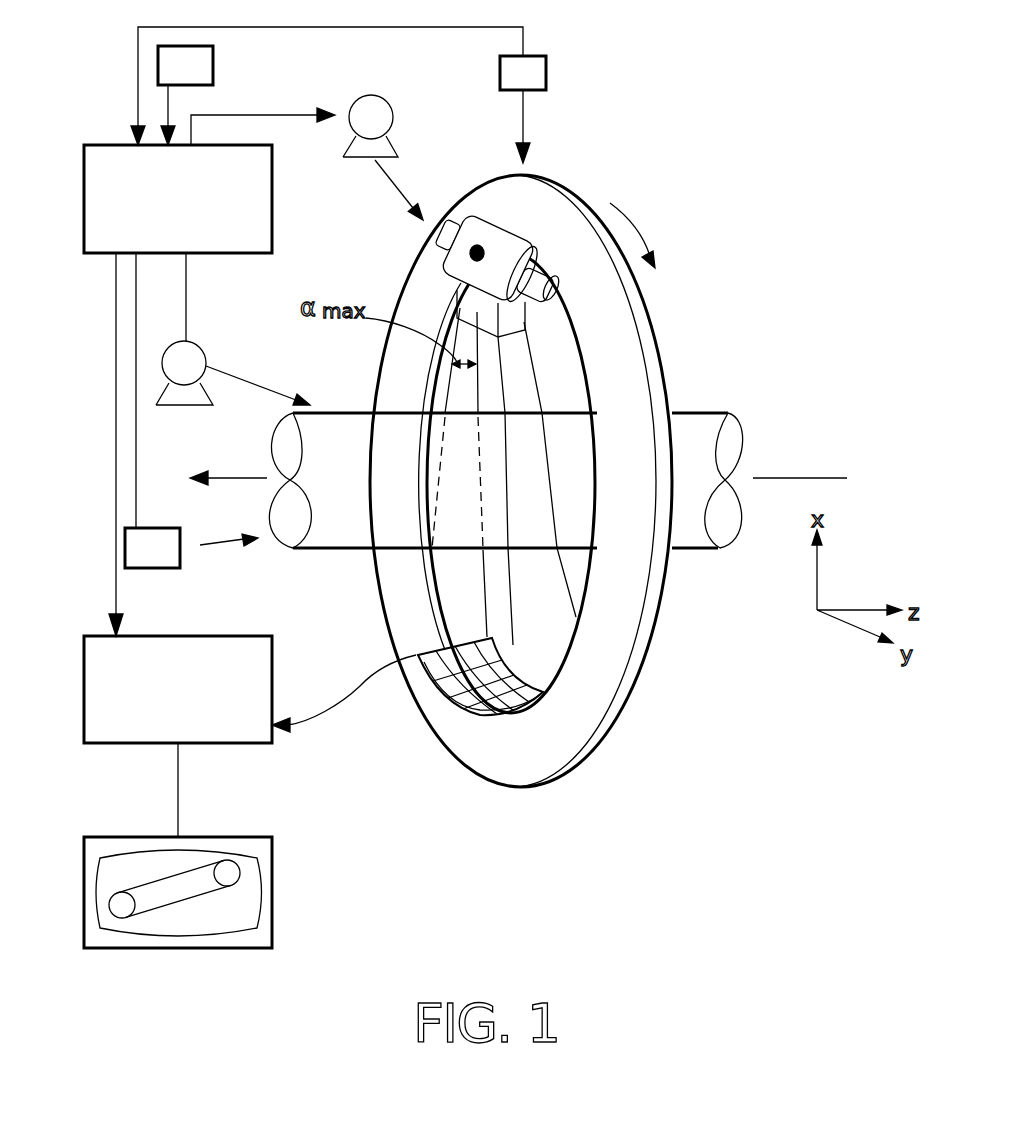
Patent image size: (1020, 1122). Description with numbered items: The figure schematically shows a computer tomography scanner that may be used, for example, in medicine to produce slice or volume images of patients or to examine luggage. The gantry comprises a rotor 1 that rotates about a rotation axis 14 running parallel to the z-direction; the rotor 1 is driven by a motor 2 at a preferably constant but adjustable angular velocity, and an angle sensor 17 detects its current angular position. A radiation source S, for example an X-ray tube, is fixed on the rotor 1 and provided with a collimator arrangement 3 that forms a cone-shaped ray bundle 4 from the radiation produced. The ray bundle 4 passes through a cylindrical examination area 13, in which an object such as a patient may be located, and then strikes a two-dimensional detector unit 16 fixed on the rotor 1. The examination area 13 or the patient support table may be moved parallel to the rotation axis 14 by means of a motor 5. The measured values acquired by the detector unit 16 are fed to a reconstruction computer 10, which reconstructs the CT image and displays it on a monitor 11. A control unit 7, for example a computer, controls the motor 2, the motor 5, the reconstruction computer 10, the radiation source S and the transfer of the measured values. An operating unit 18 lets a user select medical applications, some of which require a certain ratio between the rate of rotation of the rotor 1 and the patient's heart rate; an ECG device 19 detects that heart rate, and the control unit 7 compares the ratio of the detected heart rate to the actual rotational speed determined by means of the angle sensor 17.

The rotor 1 is at (620, 643).
The motor 2 is at (393, 111).
The collimator arrangement 3 is at (527, 318).
The ray bundle 4 is at (512, 602).
The motor 5 is at (207, 350).
The control unit 7 is at (84, 200).
The reconstruction computer 10 is at (230, 635).
The monitor 11 is at (230, 836).
The examination area 13 is at (335, 430).
The rotation axis 14 is at (225, 478).
The detector unit 16 is at (446, 707).
The angle sensor 17 is at (546, 72).
The operating unit 18 is at (213, 69).
The ECG device 19 is at (125, 549).
The radiation source S is at (492, 234).